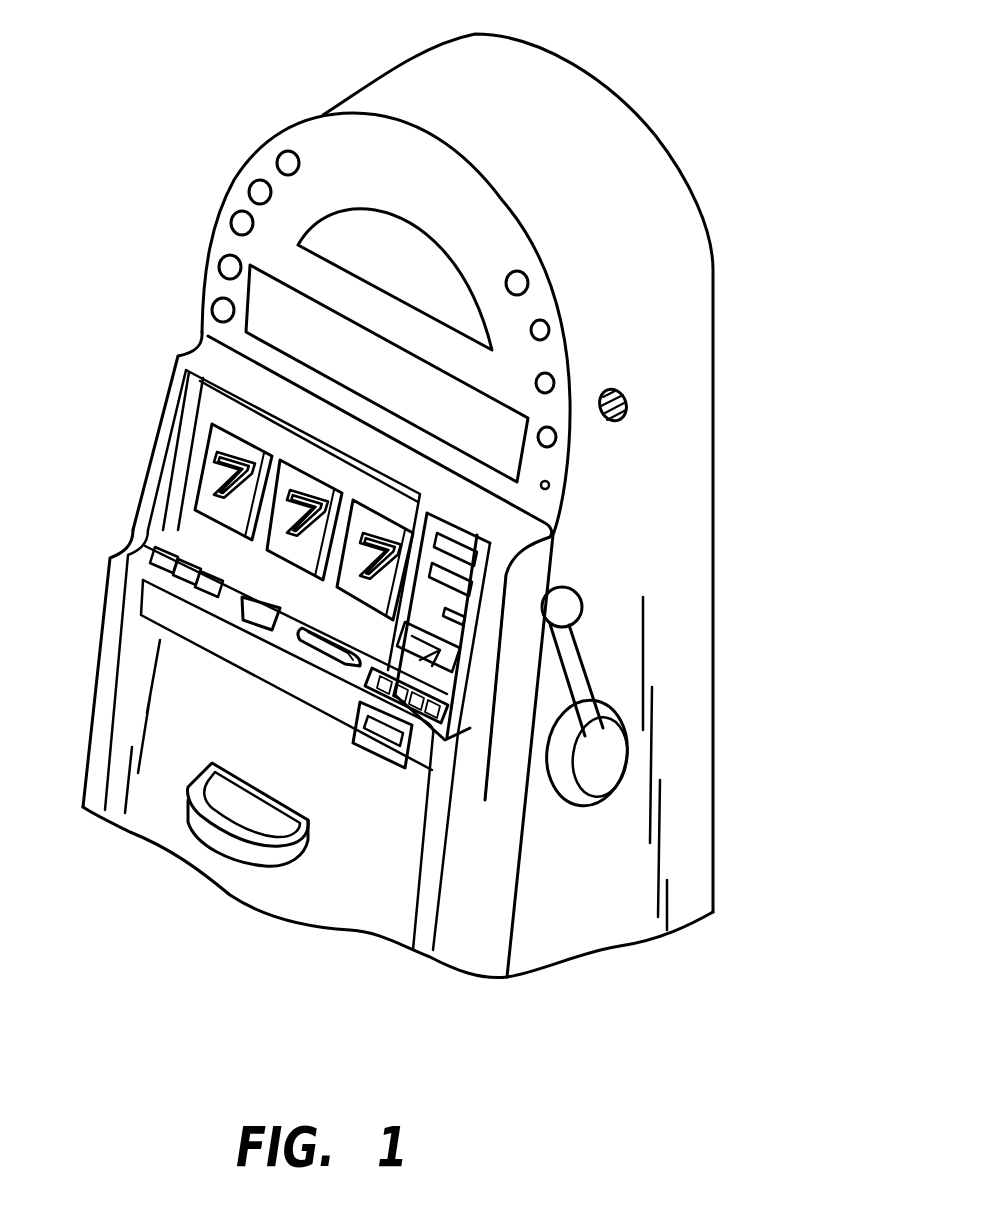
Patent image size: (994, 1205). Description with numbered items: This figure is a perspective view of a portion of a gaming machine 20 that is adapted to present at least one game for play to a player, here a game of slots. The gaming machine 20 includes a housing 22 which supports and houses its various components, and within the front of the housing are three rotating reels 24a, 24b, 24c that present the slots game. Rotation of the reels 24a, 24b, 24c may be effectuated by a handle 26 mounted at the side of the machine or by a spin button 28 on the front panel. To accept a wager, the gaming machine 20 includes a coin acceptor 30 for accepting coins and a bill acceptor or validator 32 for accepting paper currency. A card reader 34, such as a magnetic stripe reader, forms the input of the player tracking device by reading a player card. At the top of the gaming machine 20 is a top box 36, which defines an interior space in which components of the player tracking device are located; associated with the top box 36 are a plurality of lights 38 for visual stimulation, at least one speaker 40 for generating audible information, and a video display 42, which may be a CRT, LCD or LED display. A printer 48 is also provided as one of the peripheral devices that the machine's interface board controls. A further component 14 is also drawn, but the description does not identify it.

The credit display 14 is at (447, 737).
The gaming machine 20 is at (740, 71).
The housing 22 is at (687, 817).
The rotating reel 24a is at (215, 446).
The rotating reel 24b is at (293, 493).
The rotating reel 24c is at (372, 520).
The handle 26 is at (600, 665).
The spin button 28 is at (253, 617).
The coin acceptor 30 is at (312, 667).
The bill acceptor or validator 32 is at (496, 682).
The card reader 34 is at (381, 758).
The top box 36 is at (680, 275).
The lights 38 is at (553, 330).
The speaker 40 is at (627, 403).
The video display 42 is at (267, 292).
The printer 48 is at (487, 590).